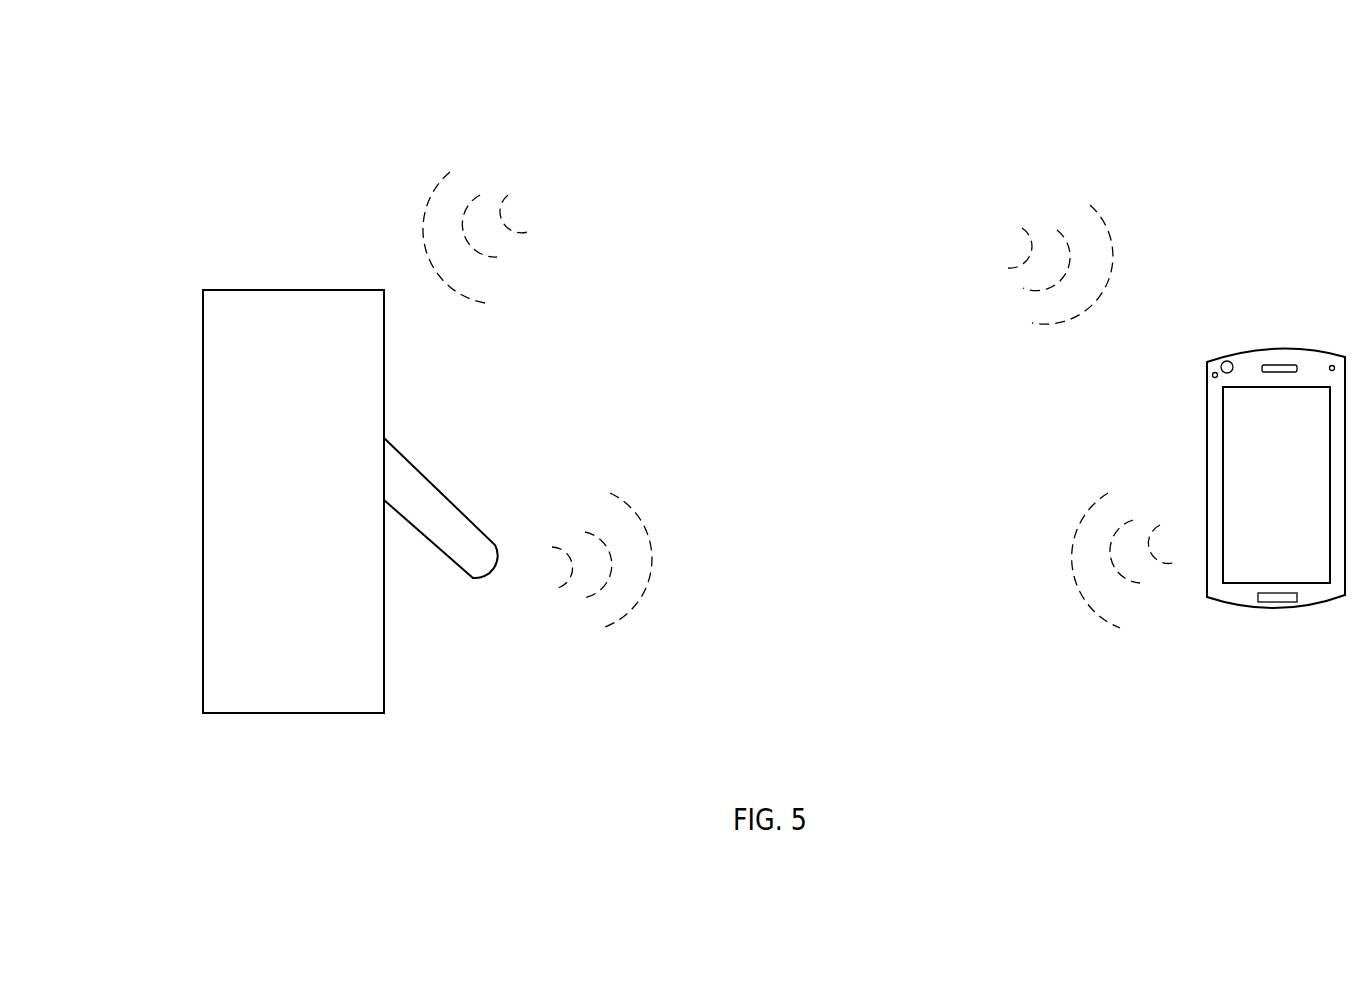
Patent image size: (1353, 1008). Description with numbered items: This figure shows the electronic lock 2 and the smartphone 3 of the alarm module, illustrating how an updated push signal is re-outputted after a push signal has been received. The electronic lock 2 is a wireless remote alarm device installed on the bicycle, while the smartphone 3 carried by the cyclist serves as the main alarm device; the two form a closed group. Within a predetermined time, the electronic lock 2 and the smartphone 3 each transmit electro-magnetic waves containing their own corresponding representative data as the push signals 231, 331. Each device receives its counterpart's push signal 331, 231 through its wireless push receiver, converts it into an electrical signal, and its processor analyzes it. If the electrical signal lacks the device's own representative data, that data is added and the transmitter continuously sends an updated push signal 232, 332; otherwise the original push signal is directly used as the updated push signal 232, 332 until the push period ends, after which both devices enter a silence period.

The electronic lock 2 is at (295, 317).
The push signal 231 is at (428, 203).
The updated push signal 232 is at (638, 515).
The smartphone 3 is at (1212, 400).
The push signal 331 is at (1107, 222).
The updated push signal 332 is at (1075, 537).